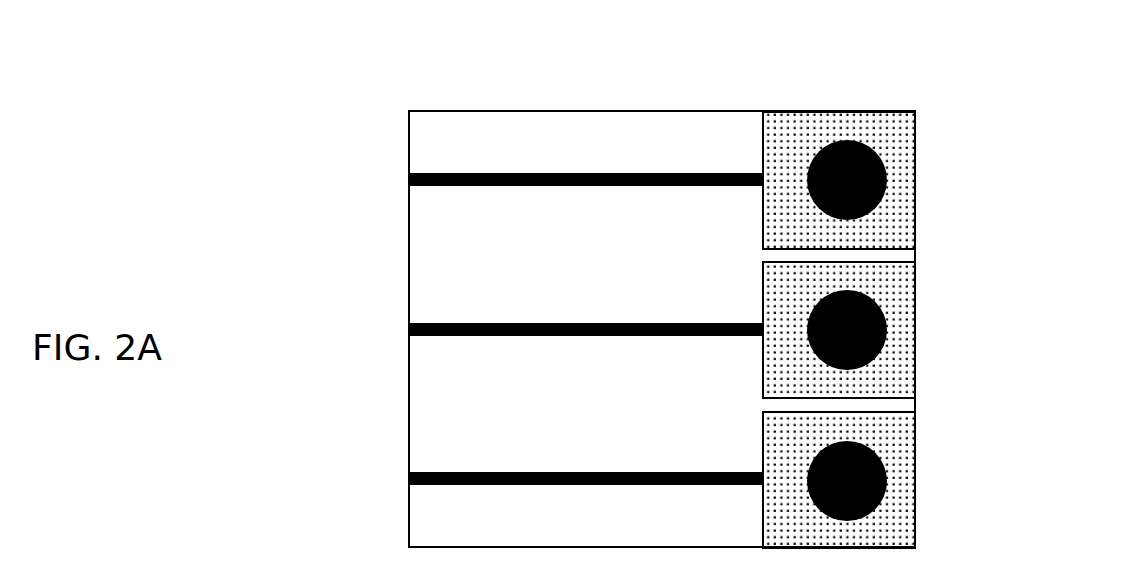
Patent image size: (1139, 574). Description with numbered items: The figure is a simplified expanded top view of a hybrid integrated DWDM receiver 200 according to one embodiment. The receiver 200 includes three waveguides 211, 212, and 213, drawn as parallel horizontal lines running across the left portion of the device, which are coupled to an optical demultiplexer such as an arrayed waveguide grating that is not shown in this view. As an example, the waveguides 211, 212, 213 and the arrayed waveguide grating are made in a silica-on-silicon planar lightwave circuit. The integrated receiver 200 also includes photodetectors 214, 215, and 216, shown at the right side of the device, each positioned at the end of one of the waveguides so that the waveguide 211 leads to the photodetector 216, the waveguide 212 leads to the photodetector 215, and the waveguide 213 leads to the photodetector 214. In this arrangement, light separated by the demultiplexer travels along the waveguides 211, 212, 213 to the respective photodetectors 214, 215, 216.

The hybrid integrated DWDM receiver 200 is at (1012, 95).
The waveguide 211 is at (535, 173).
The waveguide 212 is at (520, 323).
The waveguide 213 is at (521, 471).
The photodetector 214 is at (915, 463).
The photodetector 215 is at (915, 328).
The photodetector 216 is at (915, 193).